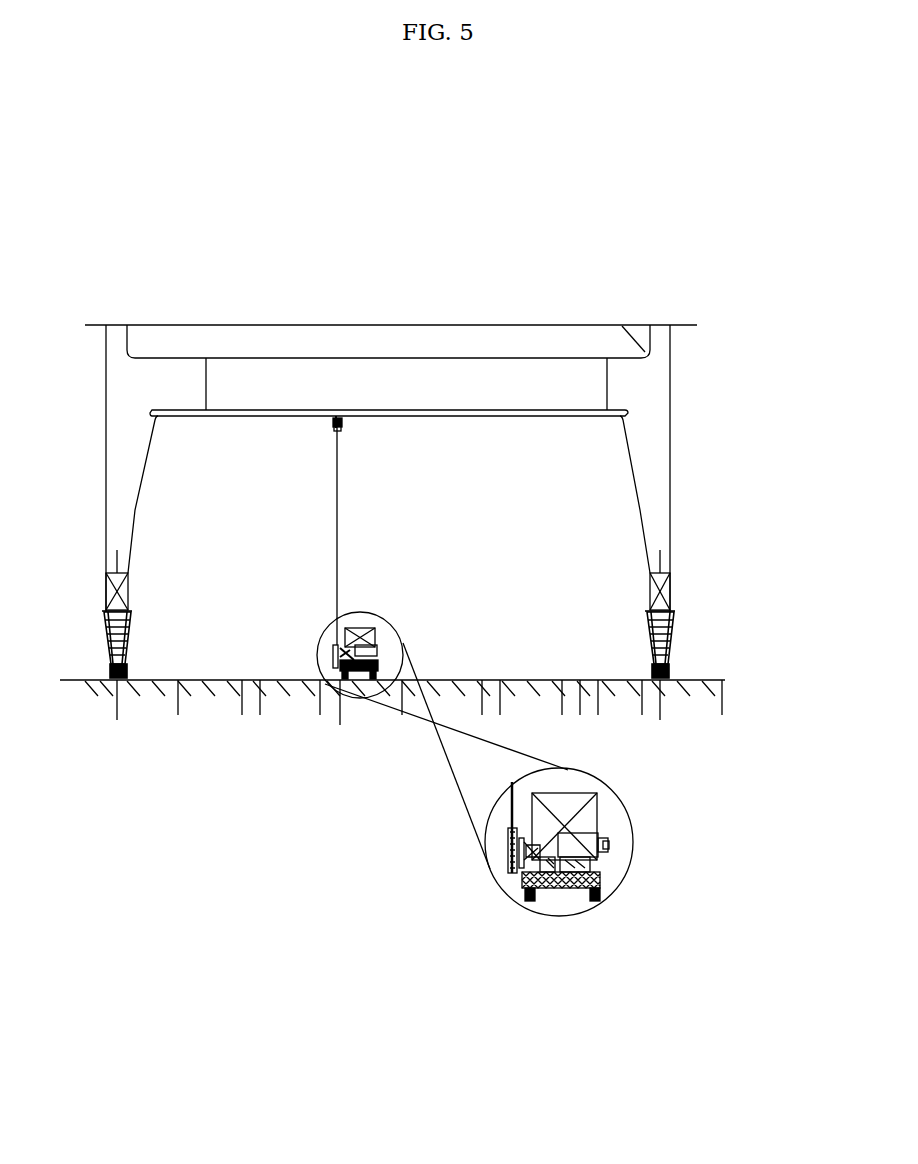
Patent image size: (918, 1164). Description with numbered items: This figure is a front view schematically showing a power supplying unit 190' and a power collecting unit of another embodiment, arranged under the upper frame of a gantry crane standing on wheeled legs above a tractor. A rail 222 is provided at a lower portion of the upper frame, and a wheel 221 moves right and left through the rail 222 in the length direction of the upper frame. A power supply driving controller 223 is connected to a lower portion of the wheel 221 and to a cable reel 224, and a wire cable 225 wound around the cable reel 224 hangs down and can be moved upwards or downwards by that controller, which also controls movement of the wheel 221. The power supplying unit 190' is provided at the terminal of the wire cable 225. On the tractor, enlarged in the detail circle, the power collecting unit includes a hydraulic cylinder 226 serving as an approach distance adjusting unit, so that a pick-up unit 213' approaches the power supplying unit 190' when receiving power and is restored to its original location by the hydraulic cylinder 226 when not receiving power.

The wheel 221 is at (343, 421).
The rail 222 is at (243, 416).
The power supply driving controller 223 is at (342, 425).
The cable reel 224 is at (341, 433).
The wire cable 225 is at (338, 553).
The hydraulic cylinder 226 is at (548, 888).
The power supplying unit 190' is at (466, 827).
The pick-up unit 213' is at (511, 902).